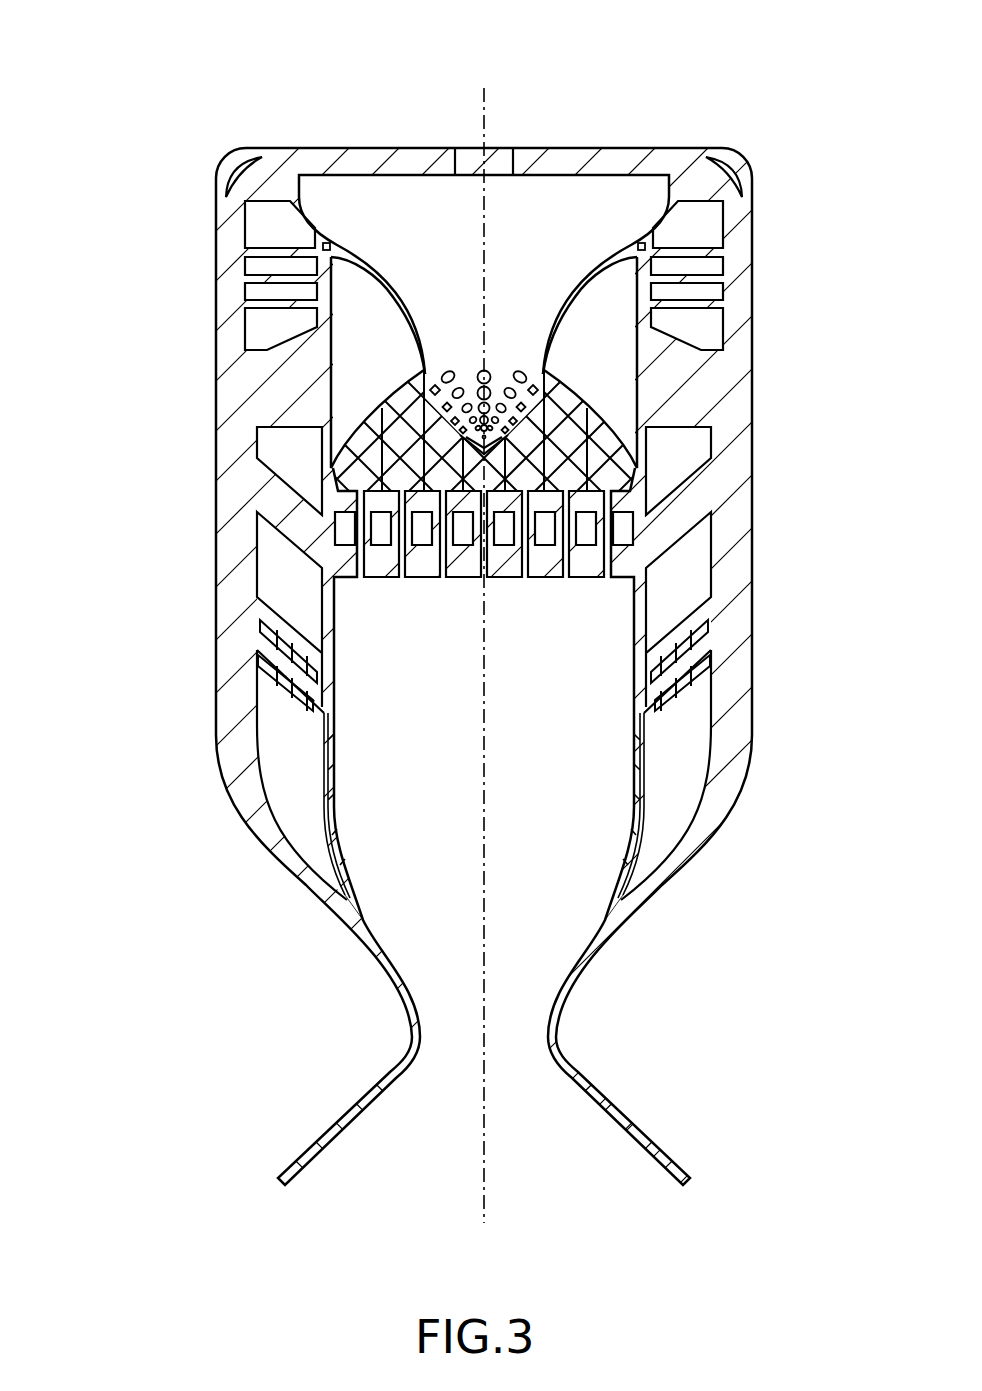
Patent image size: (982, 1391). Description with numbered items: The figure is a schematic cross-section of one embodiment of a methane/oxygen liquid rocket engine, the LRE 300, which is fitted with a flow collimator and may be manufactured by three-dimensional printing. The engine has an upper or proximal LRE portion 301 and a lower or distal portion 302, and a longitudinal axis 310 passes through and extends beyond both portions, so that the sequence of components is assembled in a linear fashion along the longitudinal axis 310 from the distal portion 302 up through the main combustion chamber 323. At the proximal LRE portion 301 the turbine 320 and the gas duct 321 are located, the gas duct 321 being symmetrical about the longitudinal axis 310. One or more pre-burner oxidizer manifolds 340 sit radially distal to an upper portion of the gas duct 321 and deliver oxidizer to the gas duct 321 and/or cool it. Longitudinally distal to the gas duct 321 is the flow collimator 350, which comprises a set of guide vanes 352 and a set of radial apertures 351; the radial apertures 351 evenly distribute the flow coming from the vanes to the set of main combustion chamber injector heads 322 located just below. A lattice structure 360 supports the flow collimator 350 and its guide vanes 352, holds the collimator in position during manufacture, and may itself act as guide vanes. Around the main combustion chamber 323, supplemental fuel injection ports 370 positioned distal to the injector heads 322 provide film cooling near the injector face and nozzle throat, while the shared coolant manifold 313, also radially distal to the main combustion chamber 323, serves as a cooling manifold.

The liquid rocket engine 300 is at (120, 120).
The proximal LRE portion 301 is at (160, 226).
The distal portion 302 is at (275, 985).
The longitudinal axis 310 is at (486, 100).
The shared coolant manifold 313 is at (650, 750).
The turbine 320 is at (568, 190).
The gas duct 321 is at (530, 300).
The main combustion chamber injector heads 322 is at (590, 552).
The main combustion chamber 323 is at (598, 820).
The pre-burner oxidizer manifolds 340 is at (641, 243).
The flow collimator 350 is at (509, 379).
The radial apertures 351 is at (516, 393).
The guide vanes 352 is at (428, 390).
The lattice structure 360 is at (610, 457).
The supplemental fuel injection ports 370 is at (693, 640).